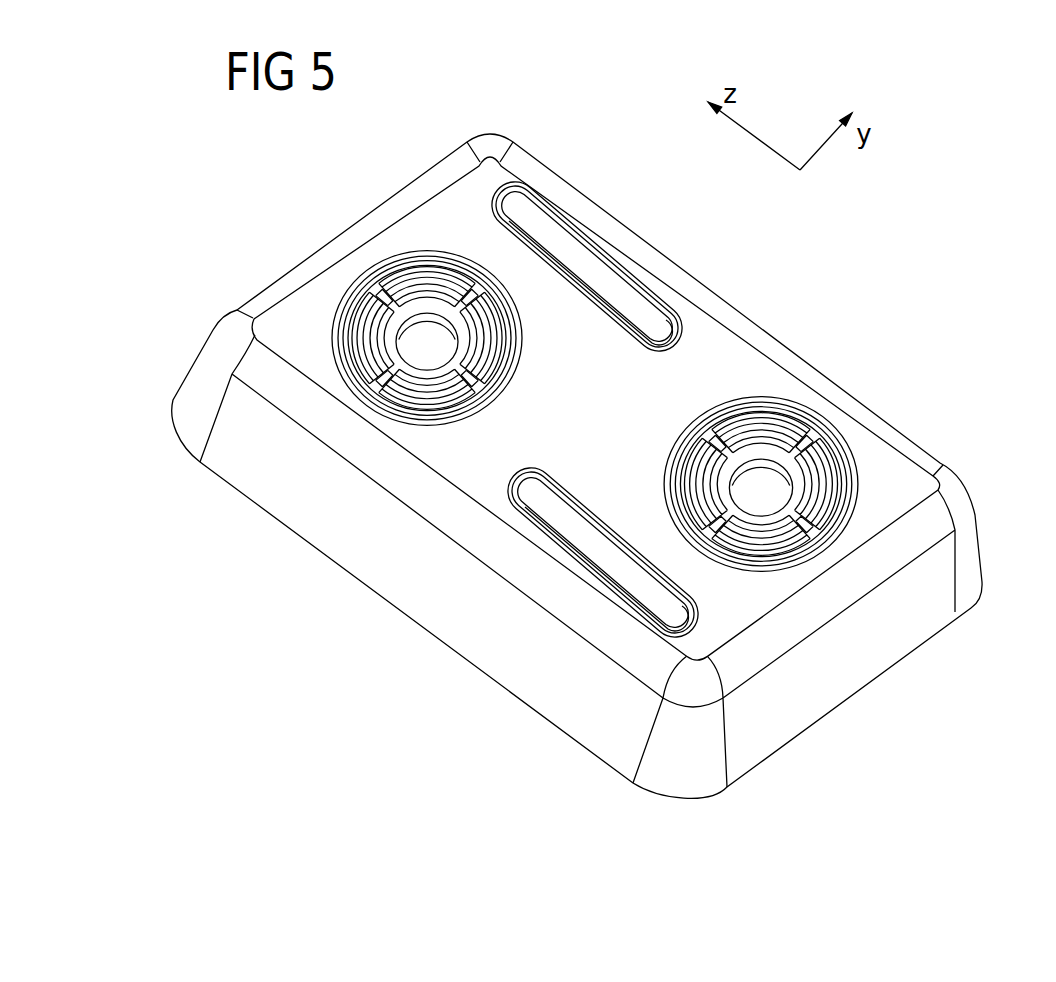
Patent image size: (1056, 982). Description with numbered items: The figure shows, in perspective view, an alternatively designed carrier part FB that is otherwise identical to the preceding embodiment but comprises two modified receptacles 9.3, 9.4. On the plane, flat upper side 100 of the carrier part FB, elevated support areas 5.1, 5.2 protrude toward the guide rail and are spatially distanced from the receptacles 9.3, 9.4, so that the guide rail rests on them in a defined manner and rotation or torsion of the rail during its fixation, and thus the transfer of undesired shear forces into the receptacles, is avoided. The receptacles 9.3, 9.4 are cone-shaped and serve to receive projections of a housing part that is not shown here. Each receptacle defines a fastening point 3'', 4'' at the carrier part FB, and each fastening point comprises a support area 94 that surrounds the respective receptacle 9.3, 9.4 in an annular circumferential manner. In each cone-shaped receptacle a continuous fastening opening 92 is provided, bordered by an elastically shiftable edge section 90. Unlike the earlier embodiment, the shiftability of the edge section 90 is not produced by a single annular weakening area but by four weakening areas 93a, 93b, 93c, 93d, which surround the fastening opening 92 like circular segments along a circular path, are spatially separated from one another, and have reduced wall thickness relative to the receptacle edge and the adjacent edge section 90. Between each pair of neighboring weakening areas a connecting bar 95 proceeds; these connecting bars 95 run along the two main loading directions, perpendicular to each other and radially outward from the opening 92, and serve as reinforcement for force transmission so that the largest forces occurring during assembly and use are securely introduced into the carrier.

The carrier part FB is at (276, 273).
The upper side 100 is at (703, 355).
The support area 5.1 is at (567, 238).
The support area 5.2 is at (583, 540).
The receptacle 9.3 is at (444, 247).
The receptacle 9.4 is at (813, 410).
The fastening point 3'' is at (419, 291).
The fastening point 4'' is at (818, 479).
The support area 94 is at (487, 267).
The fastening opening 92 is at (397, 372).
The edge section 90 is at (400, 313).
The weakening area 93a is at (413, 272).
The weakening area 93b is at (490, 331).
The weakening area 93c is at (425, 392).
The weakening area 93d is at (360, 327).
The connecting bar 95 is at (481, 369).